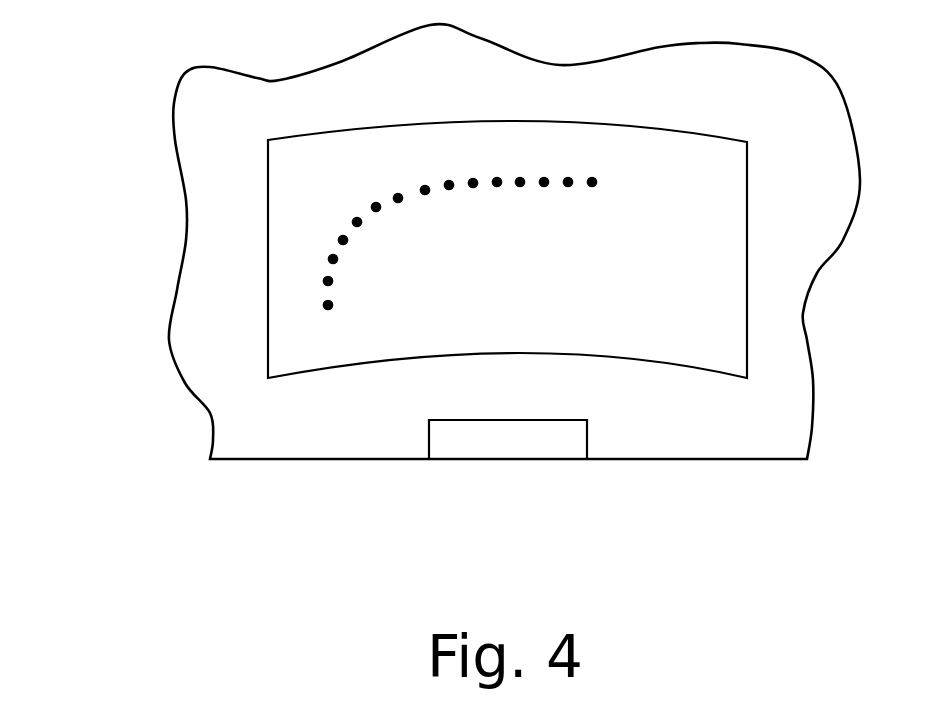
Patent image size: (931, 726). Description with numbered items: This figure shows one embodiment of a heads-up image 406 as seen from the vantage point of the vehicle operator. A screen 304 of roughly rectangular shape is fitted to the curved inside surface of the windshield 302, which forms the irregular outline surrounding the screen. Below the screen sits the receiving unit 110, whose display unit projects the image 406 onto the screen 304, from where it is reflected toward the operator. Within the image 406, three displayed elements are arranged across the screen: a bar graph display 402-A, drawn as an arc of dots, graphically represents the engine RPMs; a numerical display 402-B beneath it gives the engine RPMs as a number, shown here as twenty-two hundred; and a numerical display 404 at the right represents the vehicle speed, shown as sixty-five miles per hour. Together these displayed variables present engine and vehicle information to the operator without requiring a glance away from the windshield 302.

The windshield 302 is at (183, 193).
The screen 304 is at (718, 137).
The bar graph display 402-A is at (416, 152).
The numerical display 402-B is at (419, 330).
The numerical display 404 is at (707, 254).
The heads-up image 406 is at (204, 289).
The receiving unit 110 is at (457, 461).